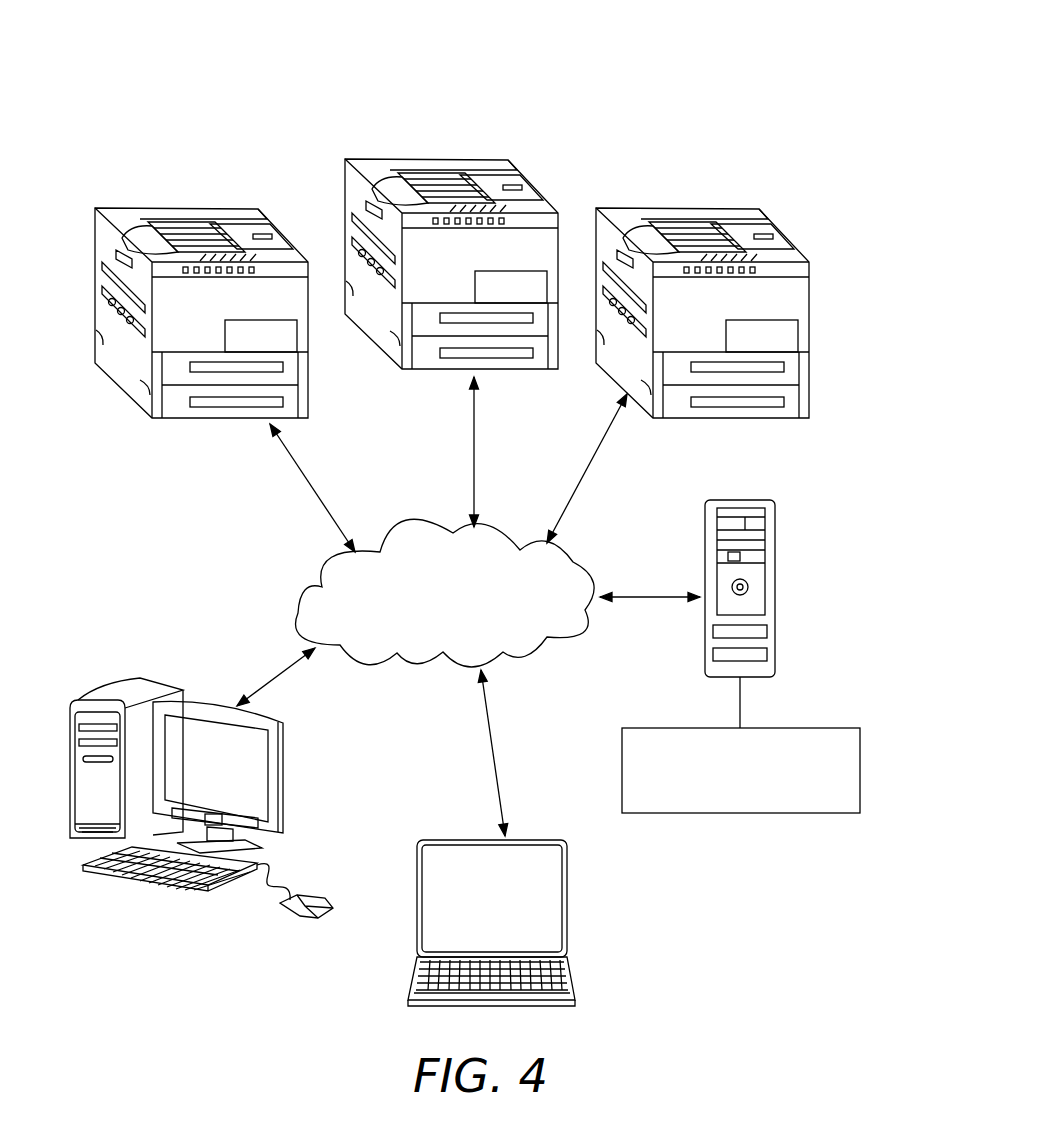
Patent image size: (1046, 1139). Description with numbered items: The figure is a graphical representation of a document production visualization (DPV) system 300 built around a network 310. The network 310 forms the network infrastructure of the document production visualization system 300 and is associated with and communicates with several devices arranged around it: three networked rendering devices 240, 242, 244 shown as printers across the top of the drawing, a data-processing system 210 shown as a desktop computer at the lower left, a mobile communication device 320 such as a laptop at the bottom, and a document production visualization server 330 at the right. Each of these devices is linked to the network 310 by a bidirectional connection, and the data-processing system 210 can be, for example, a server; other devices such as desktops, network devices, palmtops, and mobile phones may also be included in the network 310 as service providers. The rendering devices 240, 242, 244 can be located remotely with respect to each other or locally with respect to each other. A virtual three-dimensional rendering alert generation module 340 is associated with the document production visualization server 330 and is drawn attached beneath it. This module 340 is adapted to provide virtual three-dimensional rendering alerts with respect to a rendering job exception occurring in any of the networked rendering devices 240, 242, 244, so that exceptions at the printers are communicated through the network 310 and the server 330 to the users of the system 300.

The document production visualization system 300 is at (735, 138).
The data-processing system 210 is at (167, 680).
The networked rendering device 240 is at (452, 162).
The networked rendering device 242 is at (233, 208).
The networked rendering device 244 is at (704, 211).
The network 310 is at (574, 562).
The mobile communication device 320 is at (568, 929).
The document production visualization server 330 is at (778, 567).
The virtual three-dimensional rendering alert generation module 340 is at (768, 814).